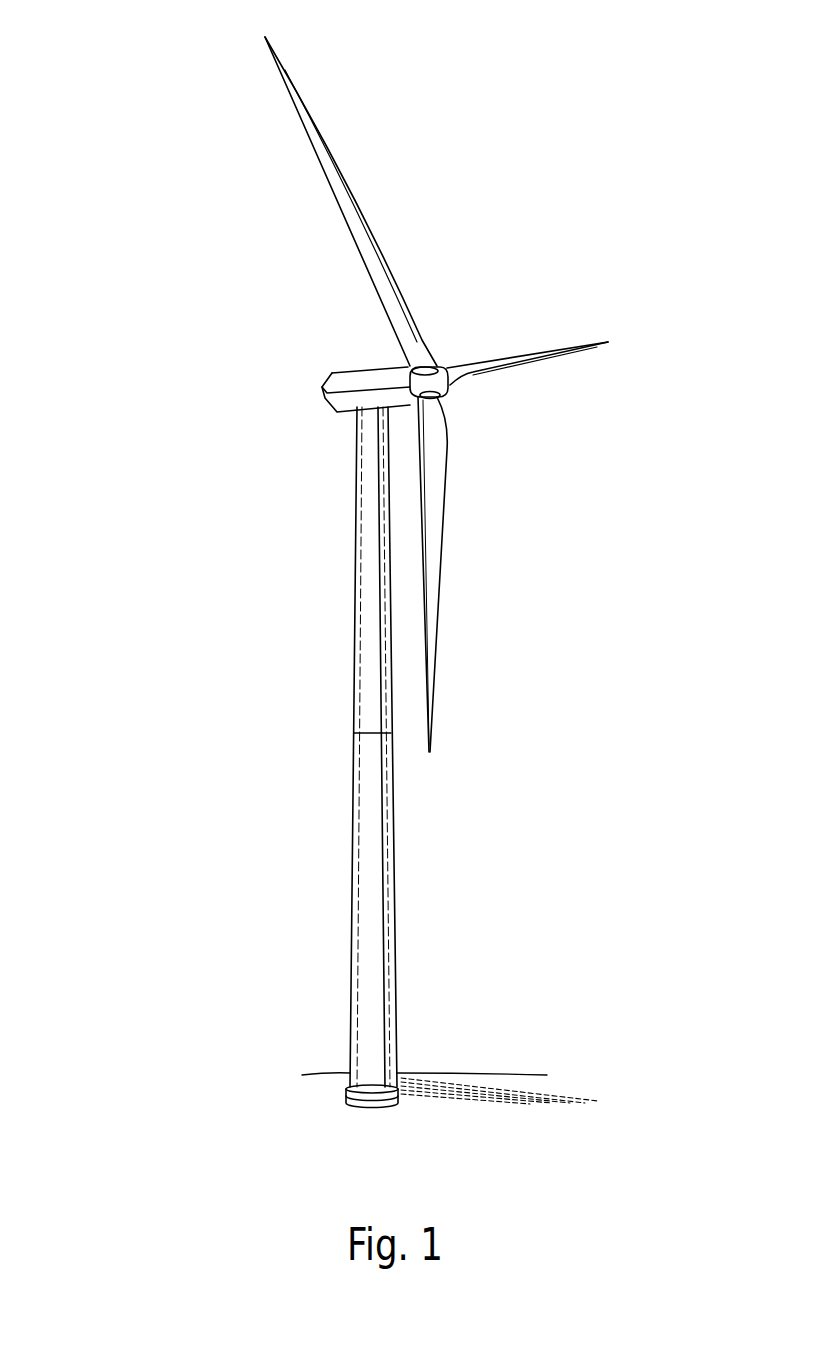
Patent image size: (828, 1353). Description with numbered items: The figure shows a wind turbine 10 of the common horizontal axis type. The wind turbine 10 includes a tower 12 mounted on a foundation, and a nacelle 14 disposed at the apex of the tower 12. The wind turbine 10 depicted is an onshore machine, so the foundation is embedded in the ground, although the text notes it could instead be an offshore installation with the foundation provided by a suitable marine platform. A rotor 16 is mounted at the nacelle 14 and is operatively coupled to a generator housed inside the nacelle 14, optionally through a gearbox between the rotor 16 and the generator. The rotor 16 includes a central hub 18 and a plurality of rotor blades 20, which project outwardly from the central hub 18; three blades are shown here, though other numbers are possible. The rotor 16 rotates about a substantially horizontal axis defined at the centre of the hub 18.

The wind turbine 10 is at (371, 572).
The tower 12 is at (377, 958).
The nacelle 14 is at (355, 383).
The rotor 16 is at (470, 394).
The central hub 18 is at (437, 365).
The rotor blades 20 is at (330, 167).